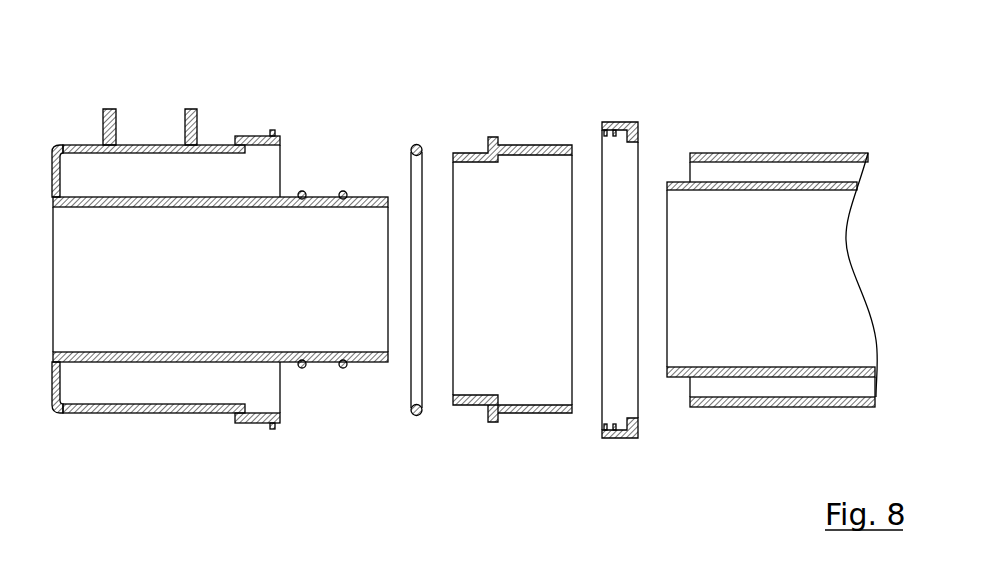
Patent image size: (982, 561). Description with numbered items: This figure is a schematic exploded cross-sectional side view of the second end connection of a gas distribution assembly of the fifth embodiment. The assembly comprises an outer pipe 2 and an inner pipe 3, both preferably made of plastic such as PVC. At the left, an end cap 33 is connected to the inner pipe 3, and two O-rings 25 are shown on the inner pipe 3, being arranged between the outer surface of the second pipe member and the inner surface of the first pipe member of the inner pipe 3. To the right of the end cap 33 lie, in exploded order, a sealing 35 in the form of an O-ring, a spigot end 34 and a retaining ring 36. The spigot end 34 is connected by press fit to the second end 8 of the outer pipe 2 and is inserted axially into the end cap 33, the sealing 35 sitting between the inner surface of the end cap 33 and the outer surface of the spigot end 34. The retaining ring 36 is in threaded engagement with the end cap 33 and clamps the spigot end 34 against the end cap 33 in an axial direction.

The end cap 33 is at (60, 146).
The O-rings 25 is at (303, 190).
The sealing 35 is at (418, 145).
The spigot end 34 is at (514, 144).
The retaining ring 36 is at (624, 122).
The second end 8 is at (700, 153).
The outer pipe 2 is at (749, 407).
The inner pipe 3 is at (799, 377).